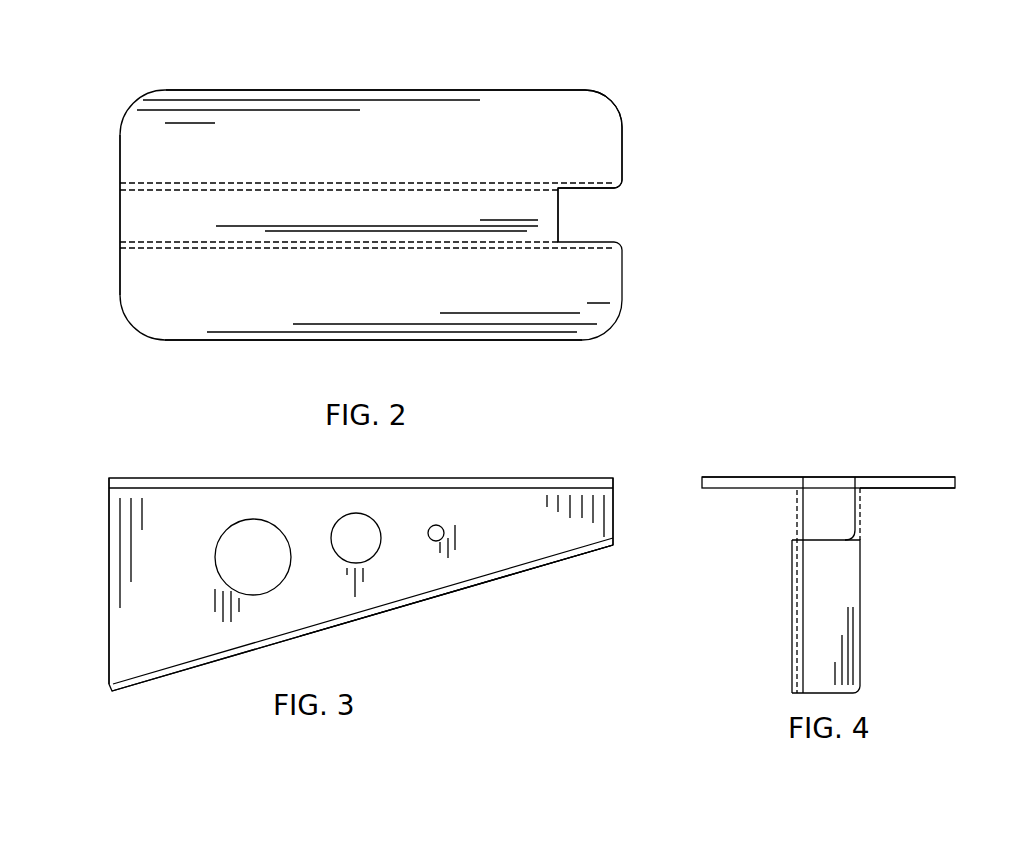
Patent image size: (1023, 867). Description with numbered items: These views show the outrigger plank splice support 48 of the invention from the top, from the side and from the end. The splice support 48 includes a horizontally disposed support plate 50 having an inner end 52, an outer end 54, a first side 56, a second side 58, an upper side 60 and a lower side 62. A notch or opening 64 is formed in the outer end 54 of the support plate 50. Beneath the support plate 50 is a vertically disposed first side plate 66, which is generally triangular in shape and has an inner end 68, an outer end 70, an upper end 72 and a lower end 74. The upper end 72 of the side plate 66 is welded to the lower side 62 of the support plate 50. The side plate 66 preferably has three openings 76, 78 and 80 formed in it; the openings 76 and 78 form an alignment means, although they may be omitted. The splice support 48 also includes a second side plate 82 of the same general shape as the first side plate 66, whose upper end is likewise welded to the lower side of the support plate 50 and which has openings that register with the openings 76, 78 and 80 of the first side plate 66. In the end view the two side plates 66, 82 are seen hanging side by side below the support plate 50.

In FIG. 2, the outrigger plank splice support 48 is at (510, 83).
In FIG. 3, the outrigger plank splice support 48 is at (483, 462).
In FIG. 4, the outrigger plank splice support 48 is at (887, 460).
In FIG. 2, the support plate 50 is at (382, 88).
In FIG. 3, the support plate 50 is at (248, 478).
In FIG. 4, the support plate 50 is at (752, 475).
In FIG. 2, the inner end 52 is at (120, 157).
In FIG. 2, the outer end 54 is at (623, 128).
In FIG. 4, the outer end 54 is at (837, 547).
In FIG. 2, the first side 56 is at (510, 340).
In FIG. 2, the second side 58 is at (325, 90).
In FIG. 2, the upper side 60 is at (406, 160).
In FIG. 4, the lower side 62 is at (920, 488).
In FIG. 2, the notch or opening 64 is at (580, 213).
In FIG. 2, the first side plate 66 is at (570, 247).
In FIG. 3, the first side plate 66 is at (438, 567).
In FIG. 4, the first side plate 66 is at (790, 503).
In FIG. 3, the inner end 68 is at (108, 593).
In FIG. 3, the outer end 70 is at (613, 507).
In FIG. 3, the upper end 72 is at (200, 488).
In FIG. 3, the lower end 74 is at (160, 664).
In FIG. 3, the opening 76 is at (282, 585).
In FIG. 3, the opening 78 is at (378, 556).
In FIG. 3, the opening 80 is at (435, 525).
In FIG. 2, the second side plate 82 is at (577, 183).
In FIG. 4, the second side plate 82 is at (863, 523).